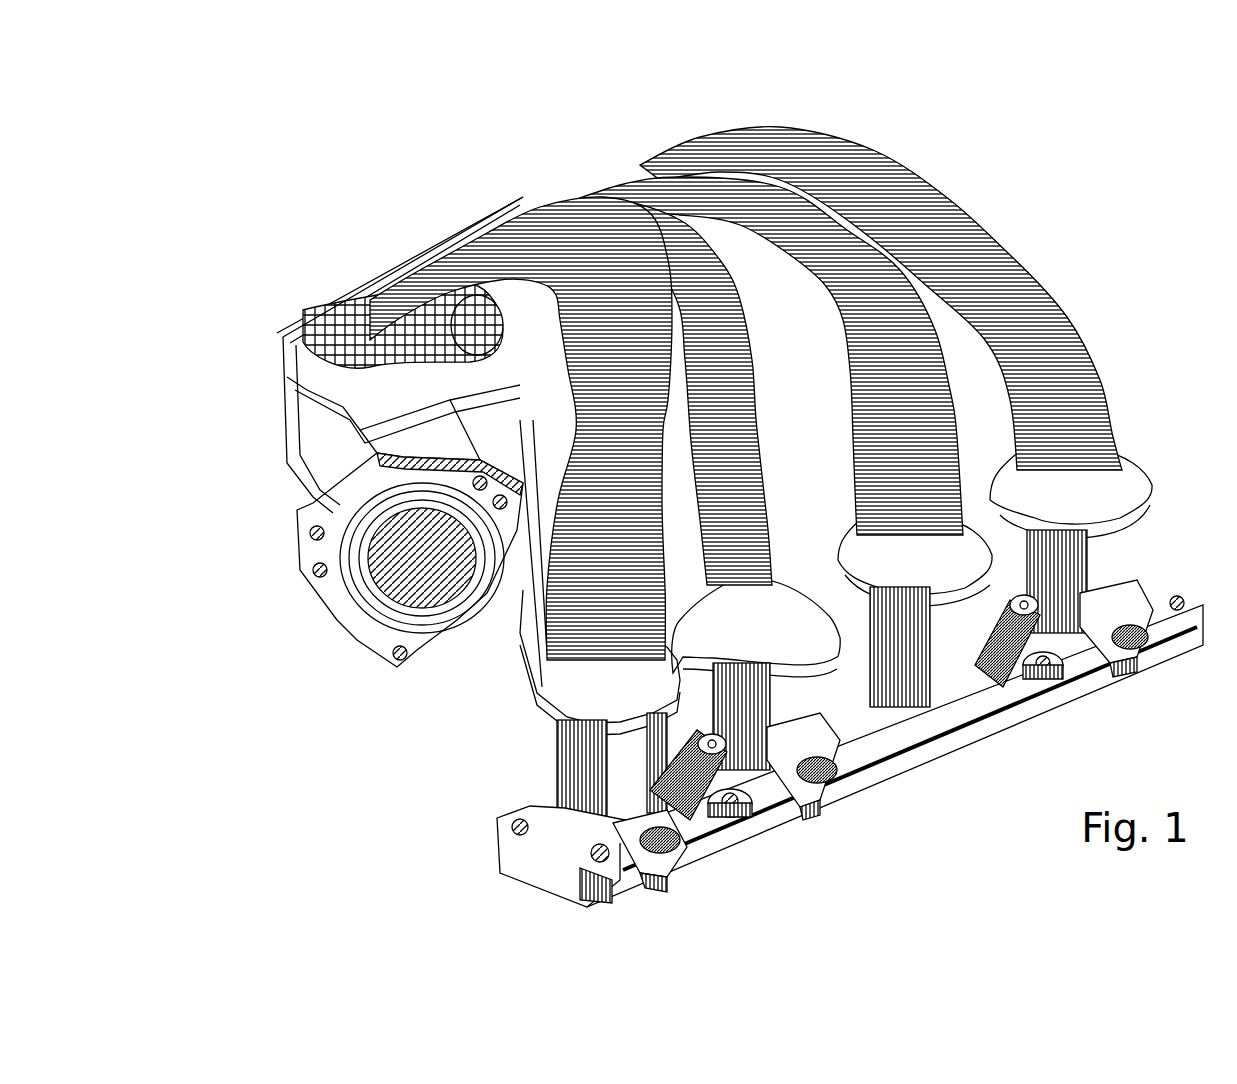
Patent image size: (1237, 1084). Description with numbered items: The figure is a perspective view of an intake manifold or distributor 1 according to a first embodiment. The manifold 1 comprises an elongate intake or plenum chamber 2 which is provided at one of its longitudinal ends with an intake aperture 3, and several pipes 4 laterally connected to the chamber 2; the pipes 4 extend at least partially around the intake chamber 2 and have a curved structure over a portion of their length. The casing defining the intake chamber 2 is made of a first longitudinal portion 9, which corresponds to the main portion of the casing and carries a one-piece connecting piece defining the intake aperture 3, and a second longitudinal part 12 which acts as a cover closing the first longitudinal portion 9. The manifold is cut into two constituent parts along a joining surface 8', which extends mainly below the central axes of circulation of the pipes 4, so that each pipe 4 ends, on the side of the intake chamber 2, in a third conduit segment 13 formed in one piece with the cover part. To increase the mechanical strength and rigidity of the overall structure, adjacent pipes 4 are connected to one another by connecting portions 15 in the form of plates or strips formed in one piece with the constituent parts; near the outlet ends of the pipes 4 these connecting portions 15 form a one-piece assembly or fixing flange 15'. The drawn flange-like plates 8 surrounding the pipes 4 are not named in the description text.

The manifold 1 is at (702, 509).
The intake chamber 2 is at (413, 547).
The intake aperture 3 is at (437, 617).
The pipes 4 is at (746, 389).
The flanges 8 is at (709, 533).
The joining surface 8' is at (845, 723).
The first longitudinal portion 9 is at (303, 480).
The second longitudinal part 12 is at (307, 343).
The third conduit segment 13 is at (563, 197).
The connecting portions 15 is at (841, 326).
The fixing flange 15' is at (850, 743).